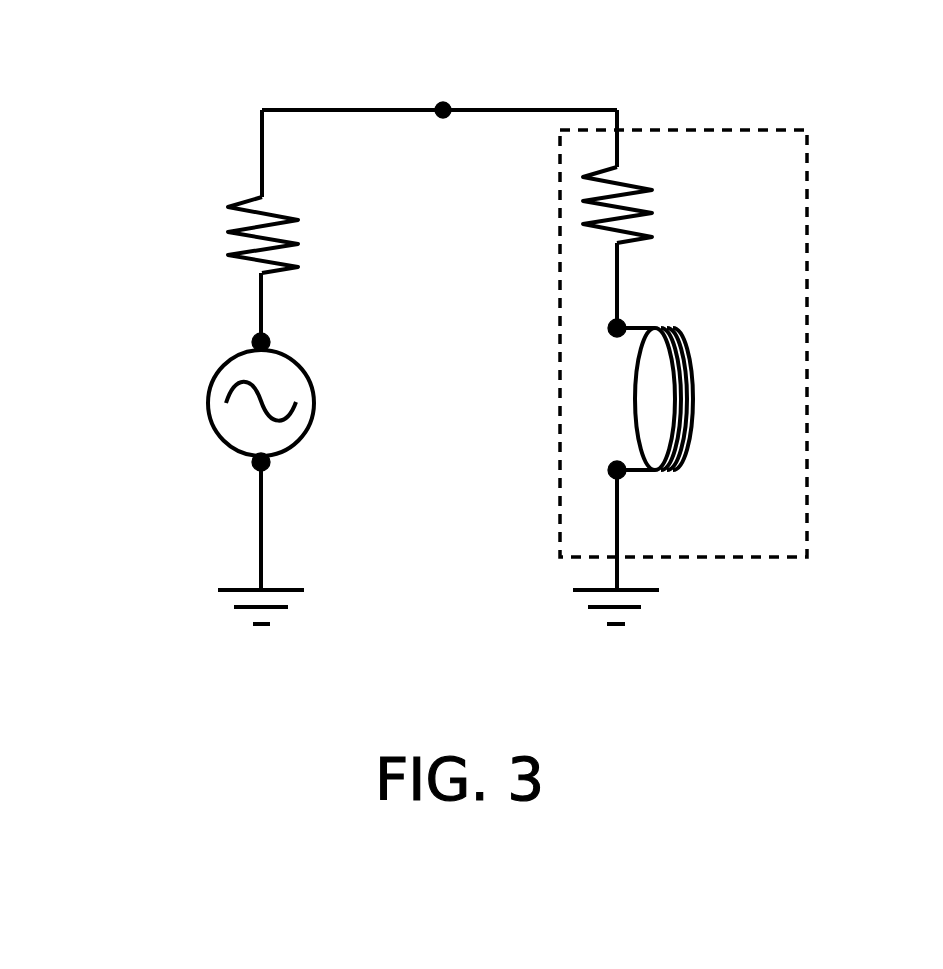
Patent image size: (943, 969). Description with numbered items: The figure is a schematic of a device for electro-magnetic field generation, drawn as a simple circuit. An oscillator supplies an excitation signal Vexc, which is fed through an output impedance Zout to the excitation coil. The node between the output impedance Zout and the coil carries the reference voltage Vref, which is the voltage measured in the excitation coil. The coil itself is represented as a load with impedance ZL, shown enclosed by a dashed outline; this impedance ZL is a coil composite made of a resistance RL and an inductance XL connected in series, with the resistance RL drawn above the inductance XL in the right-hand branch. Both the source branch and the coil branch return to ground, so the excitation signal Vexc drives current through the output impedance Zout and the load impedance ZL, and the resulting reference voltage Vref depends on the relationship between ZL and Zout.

The reference voltage Vref is at (442, 67).
The output impedance Zout is at (168, 245).
The excitation signal Vexc is at (175, 402).
The resistance RL is at (571, 213).
The inductance XL is at (590, 399).
The impedance of a coil composite ZL is at (683, 343).